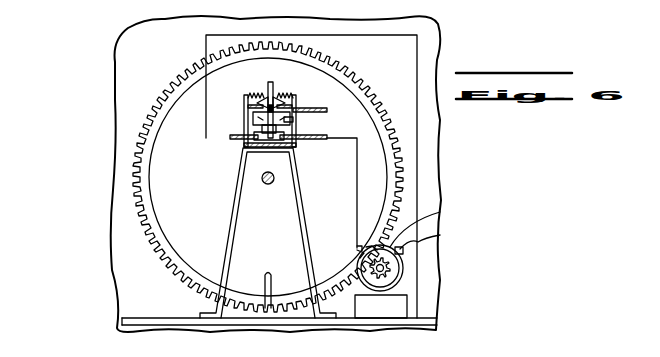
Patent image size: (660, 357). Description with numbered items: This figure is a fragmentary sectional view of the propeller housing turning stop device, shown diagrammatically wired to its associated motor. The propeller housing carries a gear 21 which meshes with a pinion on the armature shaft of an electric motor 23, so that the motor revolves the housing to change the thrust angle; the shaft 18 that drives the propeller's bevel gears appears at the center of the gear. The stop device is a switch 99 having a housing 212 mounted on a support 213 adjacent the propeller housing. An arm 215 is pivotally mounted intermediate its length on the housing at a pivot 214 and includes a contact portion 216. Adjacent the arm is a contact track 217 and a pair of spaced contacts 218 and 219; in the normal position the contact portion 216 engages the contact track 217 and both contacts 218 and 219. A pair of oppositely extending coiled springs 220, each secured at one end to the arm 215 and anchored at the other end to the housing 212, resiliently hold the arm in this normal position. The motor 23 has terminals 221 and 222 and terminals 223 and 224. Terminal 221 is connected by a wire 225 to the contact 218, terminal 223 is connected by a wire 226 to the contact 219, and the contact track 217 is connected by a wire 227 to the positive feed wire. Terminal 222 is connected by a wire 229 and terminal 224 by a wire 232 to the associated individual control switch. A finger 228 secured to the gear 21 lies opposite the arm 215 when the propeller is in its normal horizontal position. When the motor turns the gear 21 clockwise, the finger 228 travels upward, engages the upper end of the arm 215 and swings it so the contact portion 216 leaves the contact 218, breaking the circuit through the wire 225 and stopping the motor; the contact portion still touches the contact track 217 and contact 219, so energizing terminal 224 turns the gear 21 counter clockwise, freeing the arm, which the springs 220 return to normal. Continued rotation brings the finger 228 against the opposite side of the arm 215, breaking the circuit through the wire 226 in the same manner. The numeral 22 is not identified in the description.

The gear 21 is at (128, 212).
The shaft 18 is at (270, 184).
The switch 99 is at (300, 102).
The housing 212 is at (245, 108).
The support 213 is at (234, 208).
The pivot 214 is at (276, 95).
The arm 215 is at (265, 88).
The contact portion 216 is at (293, 120).
The contact track 217 is at (281, 100).
The contact 218 is at (324, 136).
The contact 219 is at (256, 126).
The coiled springs 220 is at (254, 92).
The terminal 221 is at (371, 246).
The terminal 222 is at (357, 253).
The terminal 223 is at (429, 225).
The terminal 224 is at (404, 254).
The wire 225 is at (357, 172).
The wire 226 is at (417, 78).
The wire 227 is at (320, 108).
The finger 228 is at (257, 278).
The wire 229 is at (356, 247).
The wire 232 is at (434, 238).
The shaft 22 is at (393, 267).
The electric motor 23 is at (398, 276).